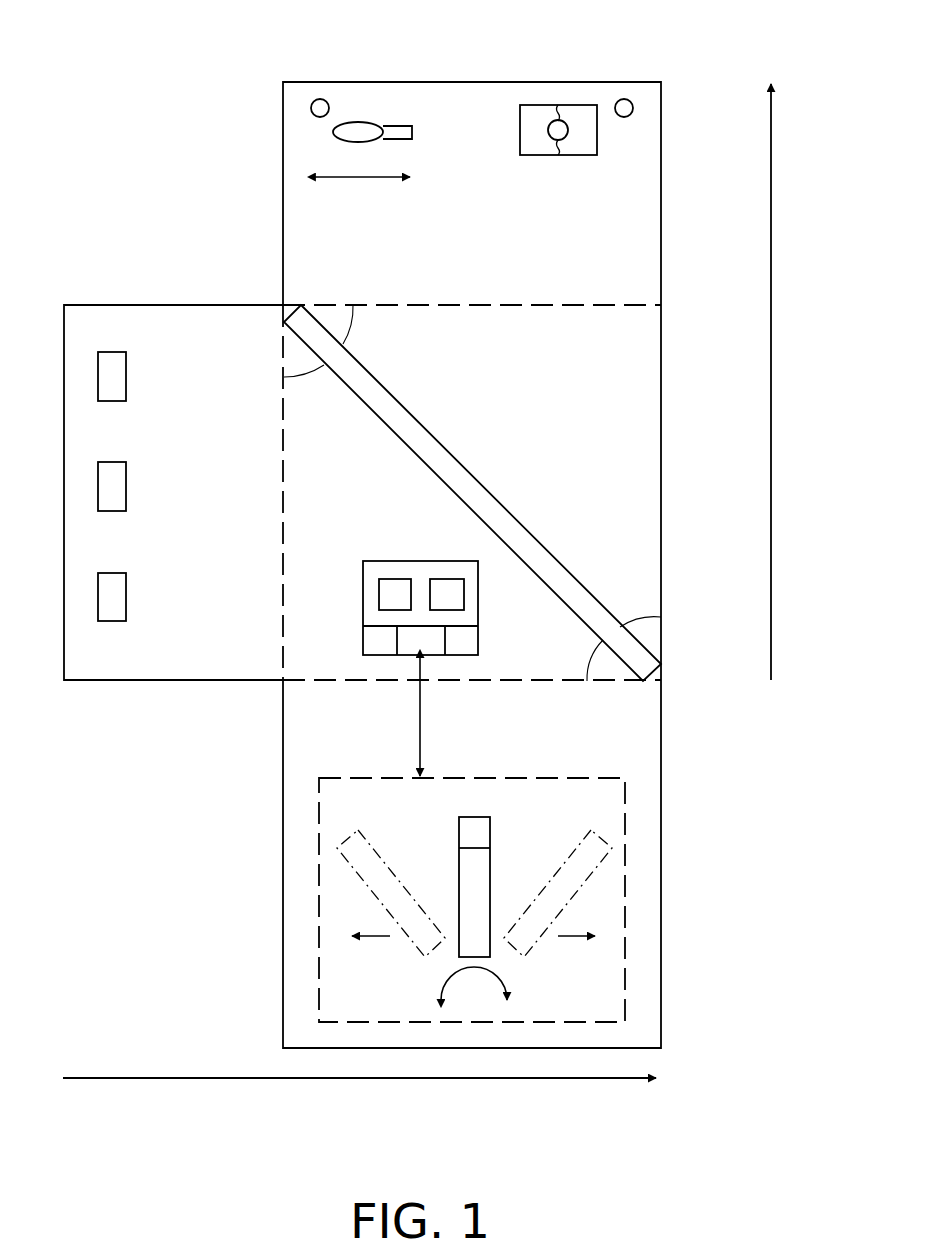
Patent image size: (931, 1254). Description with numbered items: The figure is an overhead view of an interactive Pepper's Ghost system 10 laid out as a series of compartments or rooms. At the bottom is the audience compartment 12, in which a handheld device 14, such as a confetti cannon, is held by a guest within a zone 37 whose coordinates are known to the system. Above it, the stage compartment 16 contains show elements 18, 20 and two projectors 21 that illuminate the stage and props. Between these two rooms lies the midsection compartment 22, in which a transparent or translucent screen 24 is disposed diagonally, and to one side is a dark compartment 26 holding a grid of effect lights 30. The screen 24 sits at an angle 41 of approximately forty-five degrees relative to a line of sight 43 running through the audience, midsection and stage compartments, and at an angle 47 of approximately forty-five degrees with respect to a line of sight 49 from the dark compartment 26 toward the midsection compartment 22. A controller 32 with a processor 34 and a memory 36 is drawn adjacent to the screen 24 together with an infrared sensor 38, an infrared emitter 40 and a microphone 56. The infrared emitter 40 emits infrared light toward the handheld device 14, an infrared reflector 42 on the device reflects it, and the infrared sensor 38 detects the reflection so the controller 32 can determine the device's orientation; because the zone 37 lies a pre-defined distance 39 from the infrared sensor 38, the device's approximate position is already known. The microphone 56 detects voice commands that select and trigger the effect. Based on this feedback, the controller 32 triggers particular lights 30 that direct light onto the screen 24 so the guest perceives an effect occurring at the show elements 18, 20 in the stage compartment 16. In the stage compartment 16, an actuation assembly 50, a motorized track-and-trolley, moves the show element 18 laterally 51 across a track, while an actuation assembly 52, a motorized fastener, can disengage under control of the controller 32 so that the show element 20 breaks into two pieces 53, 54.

The interactive Pepper's Ghost system 10 is at (157, 65).
The audience compartment 12 is at (628, 750).
The handheld device 14 is at (474, 890).
The stage compartment 16 is at (628, 250).
The show element 18 is at (358, 122).
The show element 20 is at (558, 112).
The projector 21 is at (320, 99).
The midsection compartment 22 is at (628, 438).
The screen 24 is at (436, 439).
The dark compartment 26 is at (173, 330).
The effect lights 30 is at (126, 373).
The controller 32 is at (412, 593).
The processor 34 is at (393, 579).
The memory 36 is at (447, 579).
The zone 37 is at (472, 778).
The infrared sensor 38 is at (363, 642).
The distance 39 is at (418, 737).
The infrared emitter 40 is at (478, 642).
The angle 41 is at (632, 613).
The infrared reflector 42 is at (459, 833).
The line of sight 43 is at (772, 278).
The angle 47 is at (592, 653).
The line of sight 49 is at (355, 1078).
The actuation assembly 50 is at (405, 105).
The lateral movement 51 is at (365, 180).
The actuation assembly 52 is at (550, 120).
The piece 53 is at (520, 132).
The piece 54 is at (597, 132).
The microphone 56 is at (407, 655).